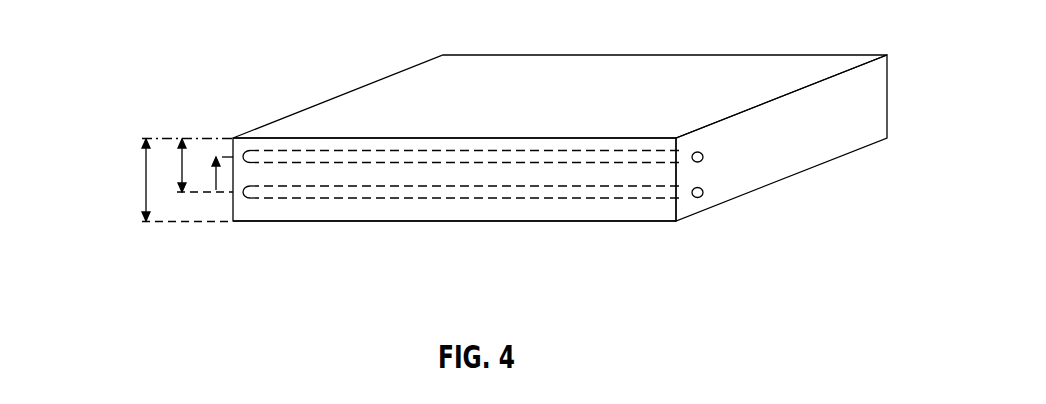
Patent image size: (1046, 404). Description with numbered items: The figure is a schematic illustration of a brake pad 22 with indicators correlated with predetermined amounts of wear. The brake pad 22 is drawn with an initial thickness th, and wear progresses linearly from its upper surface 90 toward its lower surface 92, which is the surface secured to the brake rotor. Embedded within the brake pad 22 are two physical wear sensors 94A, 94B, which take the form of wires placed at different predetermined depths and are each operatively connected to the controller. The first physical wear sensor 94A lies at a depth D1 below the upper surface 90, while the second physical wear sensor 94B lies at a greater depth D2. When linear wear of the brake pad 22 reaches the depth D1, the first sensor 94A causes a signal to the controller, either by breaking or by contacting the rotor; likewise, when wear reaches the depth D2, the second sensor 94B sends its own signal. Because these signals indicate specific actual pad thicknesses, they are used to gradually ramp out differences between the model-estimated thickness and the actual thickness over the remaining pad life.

The brake pad 22 is at (560, 159).
The upper surface 90 is at (395, 96).
The lower surface 92 is at (382, 232).
The first physical wear sensor 94A is at (702, 153).
The second physical wear sensor 94B is at (703, 196).
The depth of the first physical wear sensor D1 is at (216, 130).
The depth of the second physical wear sensor D2 is at (182, 157).
The initial thickness th is at (147, 180).